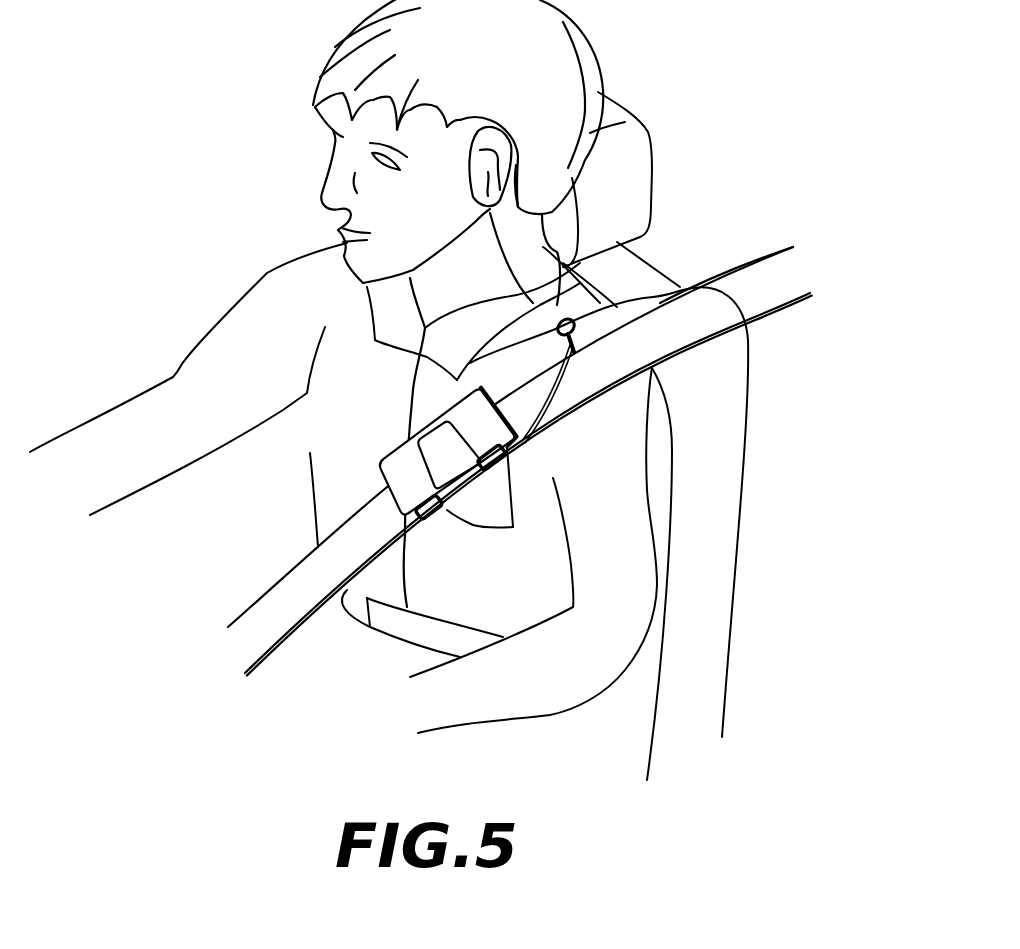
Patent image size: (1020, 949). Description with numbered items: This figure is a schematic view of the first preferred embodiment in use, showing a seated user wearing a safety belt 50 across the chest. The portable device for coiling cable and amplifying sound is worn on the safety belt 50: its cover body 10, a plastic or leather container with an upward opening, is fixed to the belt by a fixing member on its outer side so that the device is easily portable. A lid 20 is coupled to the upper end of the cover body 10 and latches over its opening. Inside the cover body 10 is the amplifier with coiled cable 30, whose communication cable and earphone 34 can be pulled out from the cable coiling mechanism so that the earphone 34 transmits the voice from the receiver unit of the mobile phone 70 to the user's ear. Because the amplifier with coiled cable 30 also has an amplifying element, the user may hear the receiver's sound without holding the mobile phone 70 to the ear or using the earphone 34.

The cover body 10 is at (429, 429).
The lid 20 is at (449, 475).
The amplifier with coiled cable 30 is at (523, 458).
The earphone 34 is at (682, 287).
The safety belt 50 is at (737, 297).
The mobile phone 70 is at (503, 395).